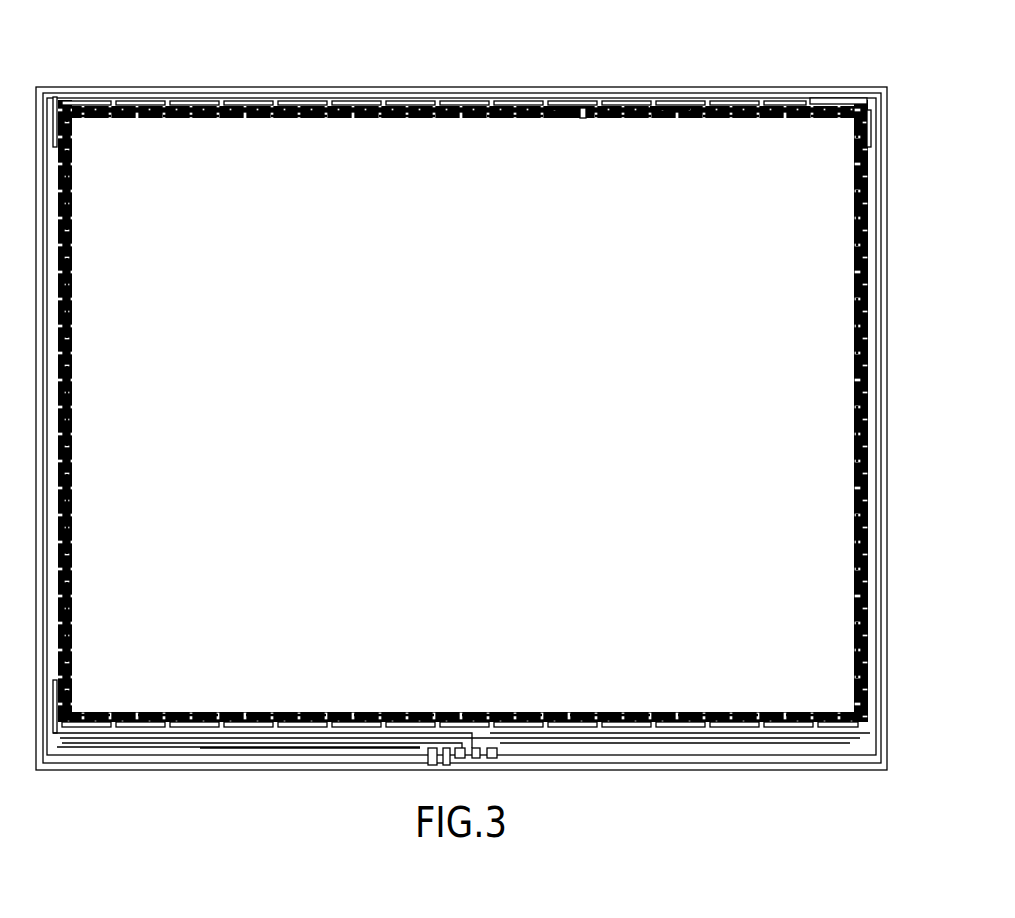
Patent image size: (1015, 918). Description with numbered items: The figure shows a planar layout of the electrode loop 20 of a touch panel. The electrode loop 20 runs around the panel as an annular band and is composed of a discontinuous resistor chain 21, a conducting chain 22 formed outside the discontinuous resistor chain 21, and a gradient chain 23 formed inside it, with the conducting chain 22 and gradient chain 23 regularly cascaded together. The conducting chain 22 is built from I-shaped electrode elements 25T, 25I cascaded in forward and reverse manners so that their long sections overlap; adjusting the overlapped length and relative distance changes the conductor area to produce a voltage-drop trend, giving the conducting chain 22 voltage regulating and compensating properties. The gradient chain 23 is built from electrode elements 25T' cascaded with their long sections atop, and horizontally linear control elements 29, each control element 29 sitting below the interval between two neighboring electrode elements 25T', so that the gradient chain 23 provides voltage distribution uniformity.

The electrode loop 20 is at (868, 240).
The discontinuous resistor chain 21 is at (788, 107).
The conducting chain 22 is at (557, 102).
The gradient chain 23 is at (775, 118).
The electrode element 25T is at (598, 77).
The electrode element 25I is at (665, 107).
The electrode element 25T' is at (582, 171).
The horizontally linear control element 29 is at (584, 115).